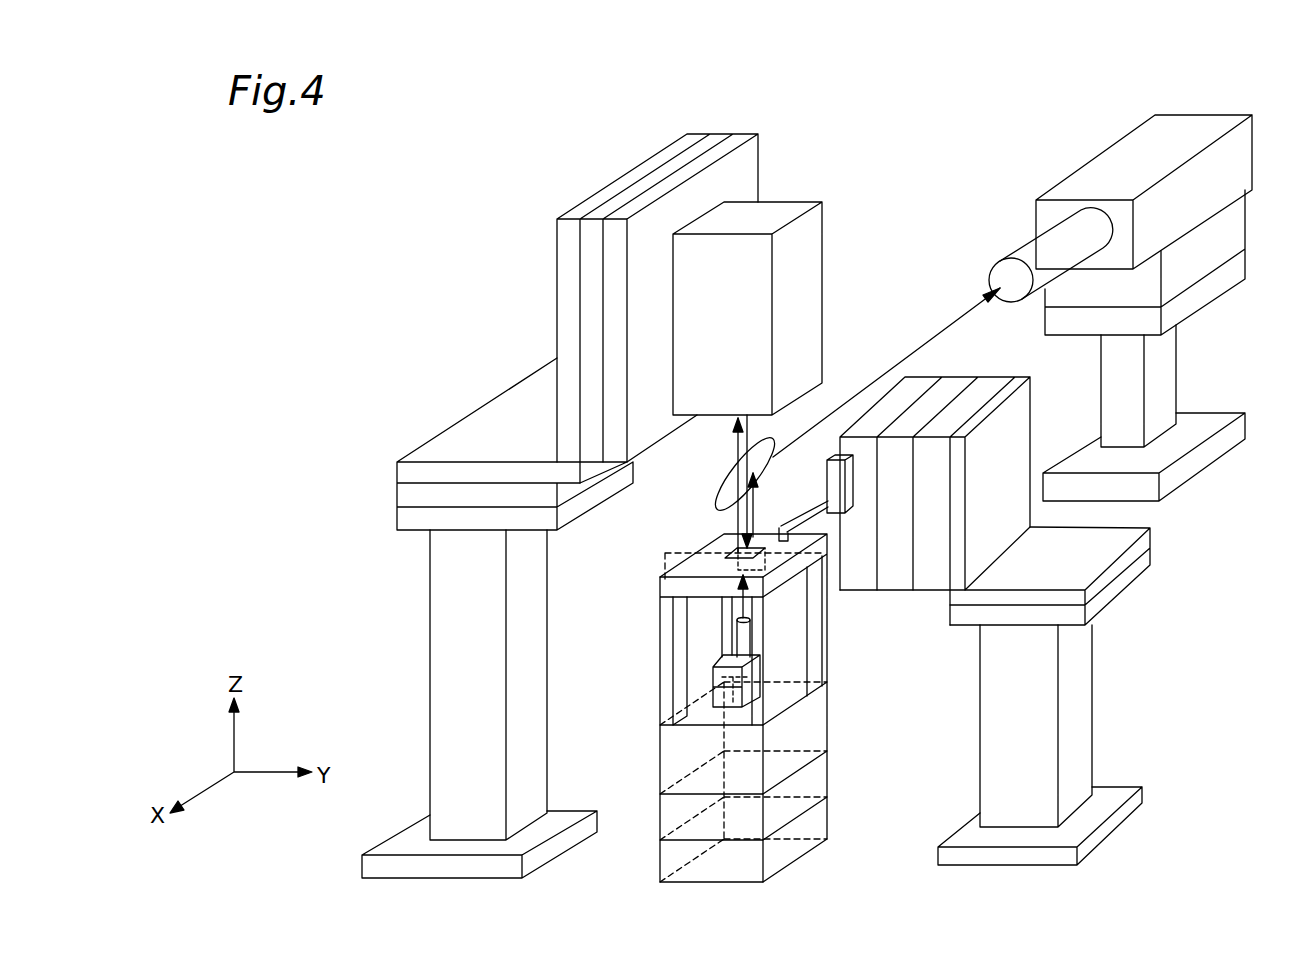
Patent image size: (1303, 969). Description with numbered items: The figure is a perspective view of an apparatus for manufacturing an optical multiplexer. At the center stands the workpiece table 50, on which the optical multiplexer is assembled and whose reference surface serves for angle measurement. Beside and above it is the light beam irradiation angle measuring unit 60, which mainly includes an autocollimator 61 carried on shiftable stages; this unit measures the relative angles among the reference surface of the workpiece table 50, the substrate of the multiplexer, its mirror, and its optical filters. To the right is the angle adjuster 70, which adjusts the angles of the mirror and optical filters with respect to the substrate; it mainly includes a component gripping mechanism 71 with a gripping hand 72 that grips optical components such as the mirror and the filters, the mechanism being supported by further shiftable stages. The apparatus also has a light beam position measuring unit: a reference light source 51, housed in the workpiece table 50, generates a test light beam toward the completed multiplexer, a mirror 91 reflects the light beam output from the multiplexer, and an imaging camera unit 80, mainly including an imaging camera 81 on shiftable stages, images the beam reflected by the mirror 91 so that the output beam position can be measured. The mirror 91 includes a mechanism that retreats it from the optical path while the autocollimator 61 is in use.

The workpiece table 50 is at (660, 580).
The reference light source 51 is at (745, 648).
The light beam irradiation angle measuring unit 60 is at (845, 225).
The autocollimator 61 is at (768, 216).
The angle adjuster 70 is at (978, 368).
The component gripping mechanism 71 is at (841, 514).
The gripping hand 72 is at (797, 513).
The imaging camera unit 80 is at (1045, 143).
The imaging camera 81 is at (1183, 131).
The mirror 91 is at (714, 487).